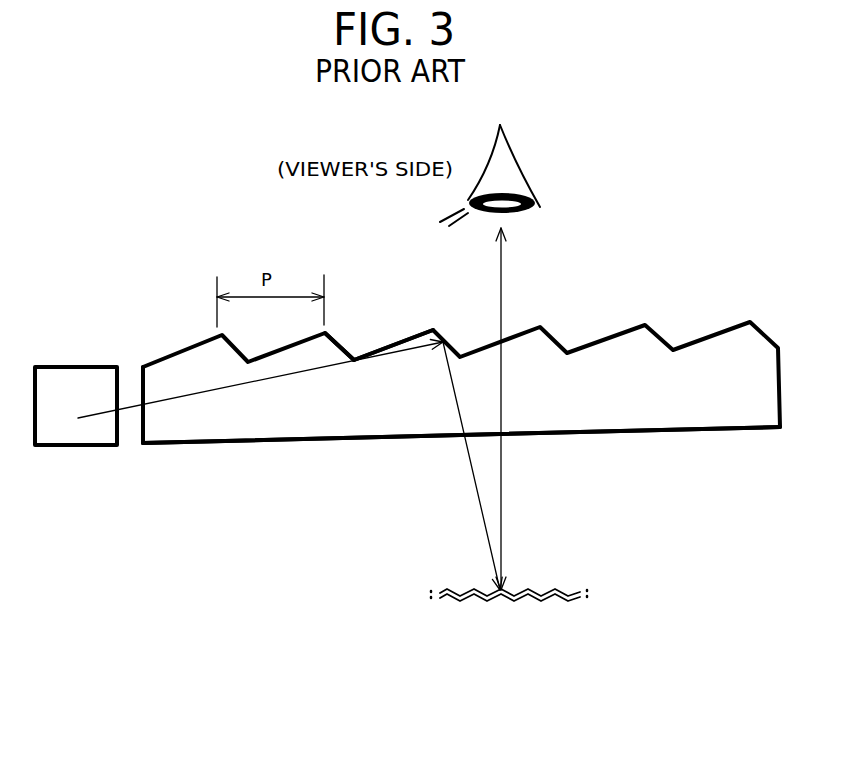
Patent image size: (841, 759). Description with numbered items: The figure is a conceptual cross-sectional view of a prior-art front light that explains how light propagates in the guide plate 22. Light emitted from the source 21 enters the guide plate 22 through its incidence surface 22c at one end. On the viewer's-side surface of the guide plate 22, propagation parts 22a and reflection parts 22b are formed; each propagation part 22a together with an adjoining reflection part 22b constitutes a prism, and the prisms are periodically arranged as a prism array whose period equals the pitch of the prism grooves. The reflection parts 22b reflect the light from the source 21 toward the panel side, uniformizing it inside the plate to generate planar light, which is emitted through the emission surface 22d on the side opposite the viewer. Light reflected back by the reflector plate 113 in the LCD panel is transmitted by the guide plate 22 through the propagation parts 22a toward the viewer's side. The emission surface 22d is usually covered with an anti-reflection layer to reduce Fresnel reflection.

The source 21 is at (88, 447).
The guide plate 22 is at (198, 323).
The propagation parts 22a is at (413, 335).
The reflection parts 22b is at (342, 350).
The incidence surface 22c is at (143, 425).
The emission surface 22d is at (602, 433).
The reflector plate 113 is at (450, 596).